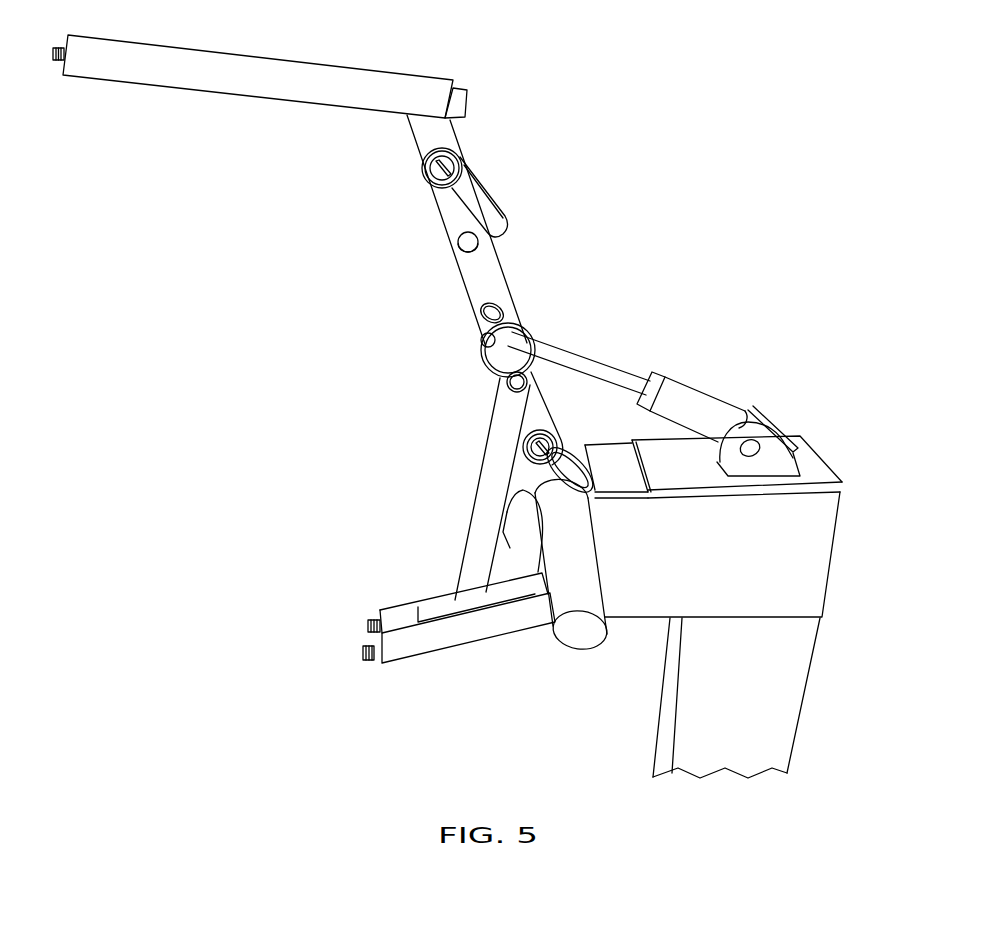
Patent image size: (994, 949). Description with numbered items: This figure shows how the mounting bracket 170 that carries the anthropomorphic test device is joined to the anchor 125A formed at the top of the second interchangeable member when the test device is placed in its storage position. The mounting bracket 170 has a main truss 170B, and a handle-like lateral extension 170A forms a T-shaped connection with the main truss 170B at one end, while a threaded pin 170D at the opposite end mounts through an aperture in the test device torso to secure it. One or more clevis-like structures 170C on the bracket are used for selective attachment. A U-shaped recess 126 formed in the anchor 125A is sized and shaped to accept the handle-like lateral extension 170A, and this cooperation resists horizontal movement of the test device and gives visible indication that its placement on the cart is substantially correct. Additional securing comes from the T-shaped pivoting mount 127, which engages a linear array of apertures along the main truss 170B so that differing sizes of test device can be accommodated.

The mounting bracket 170 is at (334, 250).
The handle-like lateral extension 170A is at (577, 652).
The main truss 170B is at (508, 291).
The clevis-like structures 170C is at (506, 230).
The threaded pin 170D is at (260, 57).
The anchor 125A is at (825, 595).
The U-shaped recess 126 is at (586, 506).
The T-shaped pivoting mount 127 is at (610, 358).